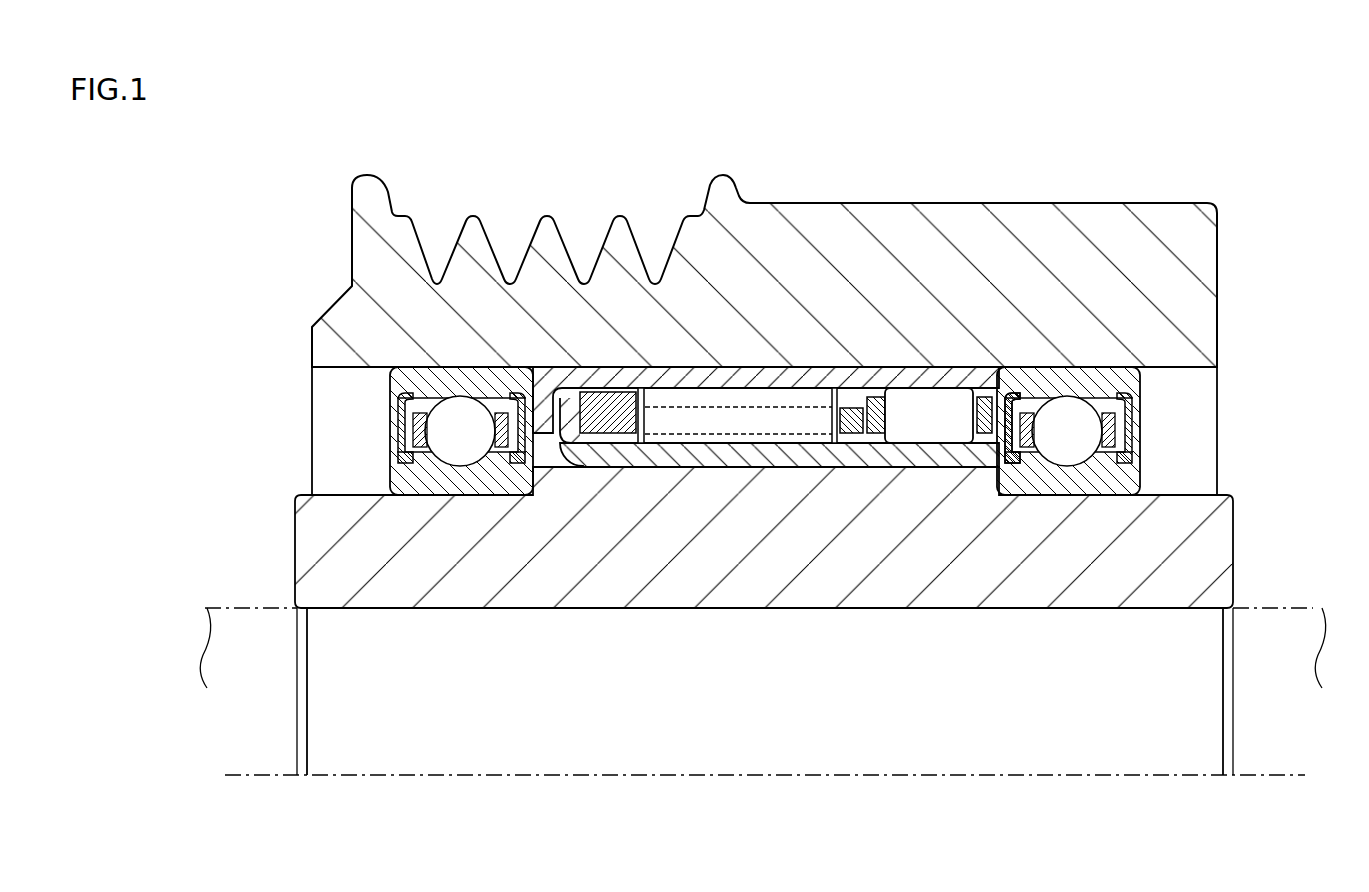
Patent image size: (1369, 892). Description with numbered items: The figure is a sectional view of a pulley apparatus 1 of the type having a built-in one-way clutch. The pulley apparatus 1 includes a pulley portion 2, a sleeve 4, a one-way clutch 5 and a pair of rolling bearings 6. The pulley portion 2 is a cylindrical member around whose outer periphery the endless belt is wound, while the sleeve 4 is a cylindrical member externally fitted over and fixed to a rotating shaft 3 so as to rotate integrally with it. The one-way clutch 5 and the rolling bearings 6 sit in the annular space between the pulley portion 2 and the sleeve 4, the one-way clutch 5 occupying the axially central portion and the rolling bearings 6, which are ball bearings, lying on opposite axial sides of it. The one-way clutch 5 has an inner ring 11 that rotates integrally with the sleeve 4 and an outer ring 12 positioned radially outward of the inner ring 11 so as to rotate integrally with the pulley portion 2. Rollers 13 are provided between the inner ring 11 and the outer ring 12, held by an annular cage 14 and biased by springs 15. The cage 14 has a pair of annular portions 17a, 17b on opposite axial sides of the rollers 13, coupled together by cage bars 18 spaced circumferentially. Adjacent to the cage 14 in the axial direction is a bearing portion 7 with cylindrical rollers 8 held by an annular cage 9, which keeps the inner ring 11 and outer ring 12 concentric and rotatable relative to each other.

The pulley apparatus 1 is at (1172, 195).
The pulley portion 2 is at (455, 225).
The rotating shaft 3 is at (1313, 607).
The sleeve 4 is at (1183, 532).
The one-way clutch 5 is at (843, 358).
The rolling bearing 6 is at (380, 389).
The bearing portion 7 is at (943, 405).
The cylindrical roller 8 is at (983, 400).
The annular cage 9 is at (1028, 385).
The inner ring 11 is at (740, 455).
The outer ring 12 is at (697, 378).
The roller 13 is at (783, 387).
The cage 14 is at (855, 398).
The spring 15 is at (665, 420).
The annular portion 17a is at (598, 410).
The annular portion 17b is at (853, 420).
The cage bar 18 is at (805, 405).